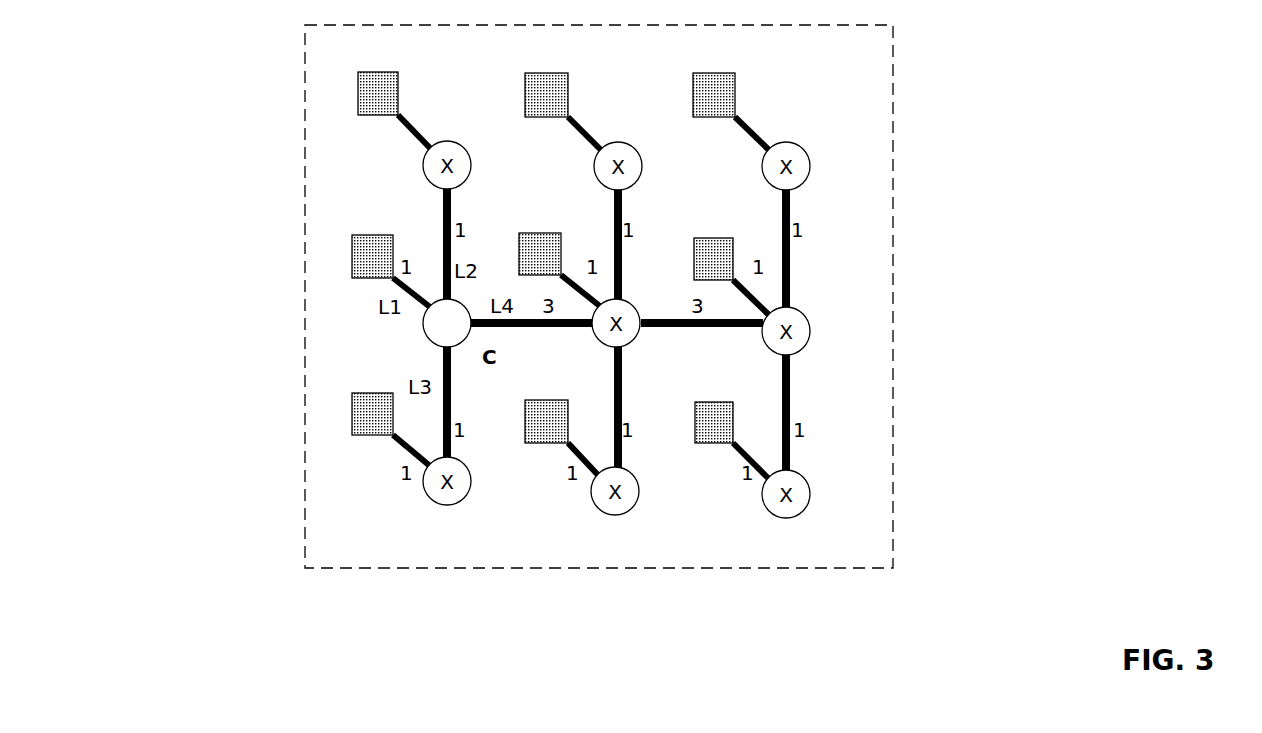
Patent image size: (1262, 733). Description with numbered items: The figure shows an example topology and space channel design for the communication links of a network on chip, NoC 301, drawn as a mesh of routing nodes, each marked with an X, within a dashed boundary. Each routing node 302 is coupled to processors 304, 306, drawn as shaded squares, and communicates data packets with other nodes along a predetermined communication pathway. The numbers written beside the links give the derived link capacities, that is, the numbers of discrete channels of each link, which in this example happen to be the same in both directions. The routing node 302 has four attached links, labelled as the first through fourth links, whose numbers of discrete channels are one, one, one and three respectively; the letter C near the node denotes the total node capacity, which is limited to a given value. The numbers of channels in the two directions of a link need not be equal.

The NoC 301 is at (940, 213).
The routing node 302 is at (418, 346).
The processor 304 is at (336, 256).
The processor 306 is at (335, 101).